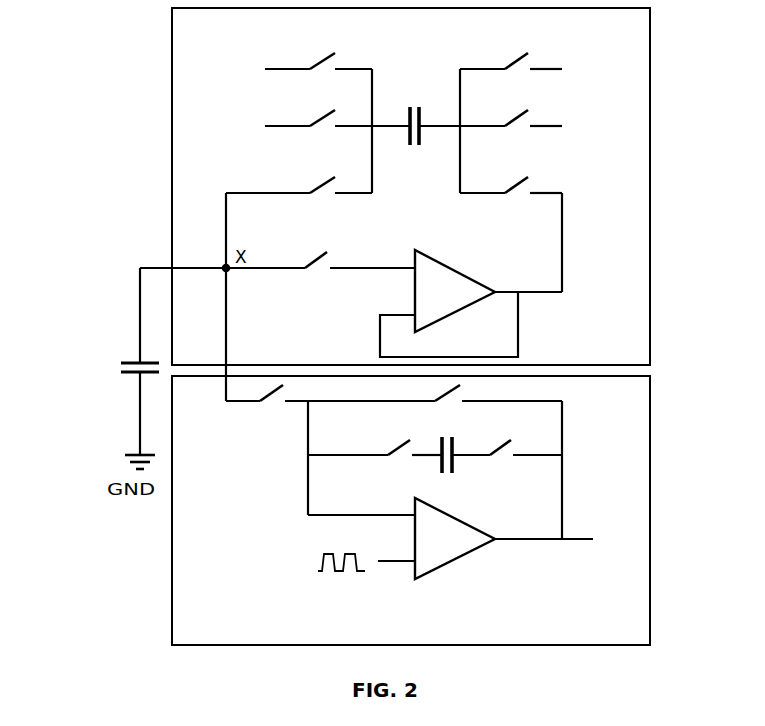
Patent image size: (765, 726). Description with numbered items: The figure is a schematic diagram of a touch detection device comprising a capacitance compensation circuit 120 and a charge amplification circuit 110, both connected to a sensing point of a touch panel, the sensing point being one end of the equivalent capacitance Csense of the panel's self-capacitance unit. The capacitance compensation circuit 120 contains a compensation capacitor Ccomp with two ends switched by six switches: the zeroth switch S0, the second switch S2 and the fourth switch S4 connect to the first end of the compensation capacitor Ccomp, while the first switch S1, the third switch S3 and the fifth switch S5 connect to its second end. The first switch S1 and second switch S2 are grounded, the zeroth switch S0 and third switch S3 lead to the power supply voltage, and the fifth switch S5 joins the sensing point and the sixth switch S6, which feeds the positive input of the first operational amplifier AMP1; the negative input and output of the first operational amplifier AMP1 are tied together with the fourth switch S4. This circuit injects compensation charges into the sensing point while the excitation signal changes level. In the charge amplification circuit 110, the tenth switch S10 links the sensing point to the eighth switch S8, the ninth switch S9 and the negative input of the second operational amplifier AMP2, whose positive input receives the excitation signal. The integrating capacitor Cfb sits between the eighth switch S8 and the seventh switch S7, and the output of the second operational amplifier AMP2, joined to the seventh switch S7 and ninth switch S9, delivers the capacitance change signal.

The capacitance compensation circuit 120 is at (447, 186).
The charge amplification circuit 110 is at (447, 510).
The zeroth switch S0 is at (511, 74).
The first switch S1 is at (318, 80).
The second switch S2 is at (511, 138).
The third switch S3 is at (318, 137).
The fourth switch S4 is at (511, 203).
The fifth switch S5 is at (299, 204).
The sixth switch S6 is at (359, 278).
The seventh switch S7 is at (507, 467).
The eighth switch S8 is at (375, 467).
The ninth switch S9 is at (498, 412).
The tenth switch S10 is at (330, 412).
The compensation capacitor Ccomp is at (413, 138).
The integrating capacitor Cfb is at (444, 472).
The equivalent capacitance Csense is at (103, 368).
The first operational amplifier AMP1 is at (471, 303).
The second operational amplifier AMP2 is at (504, 538).